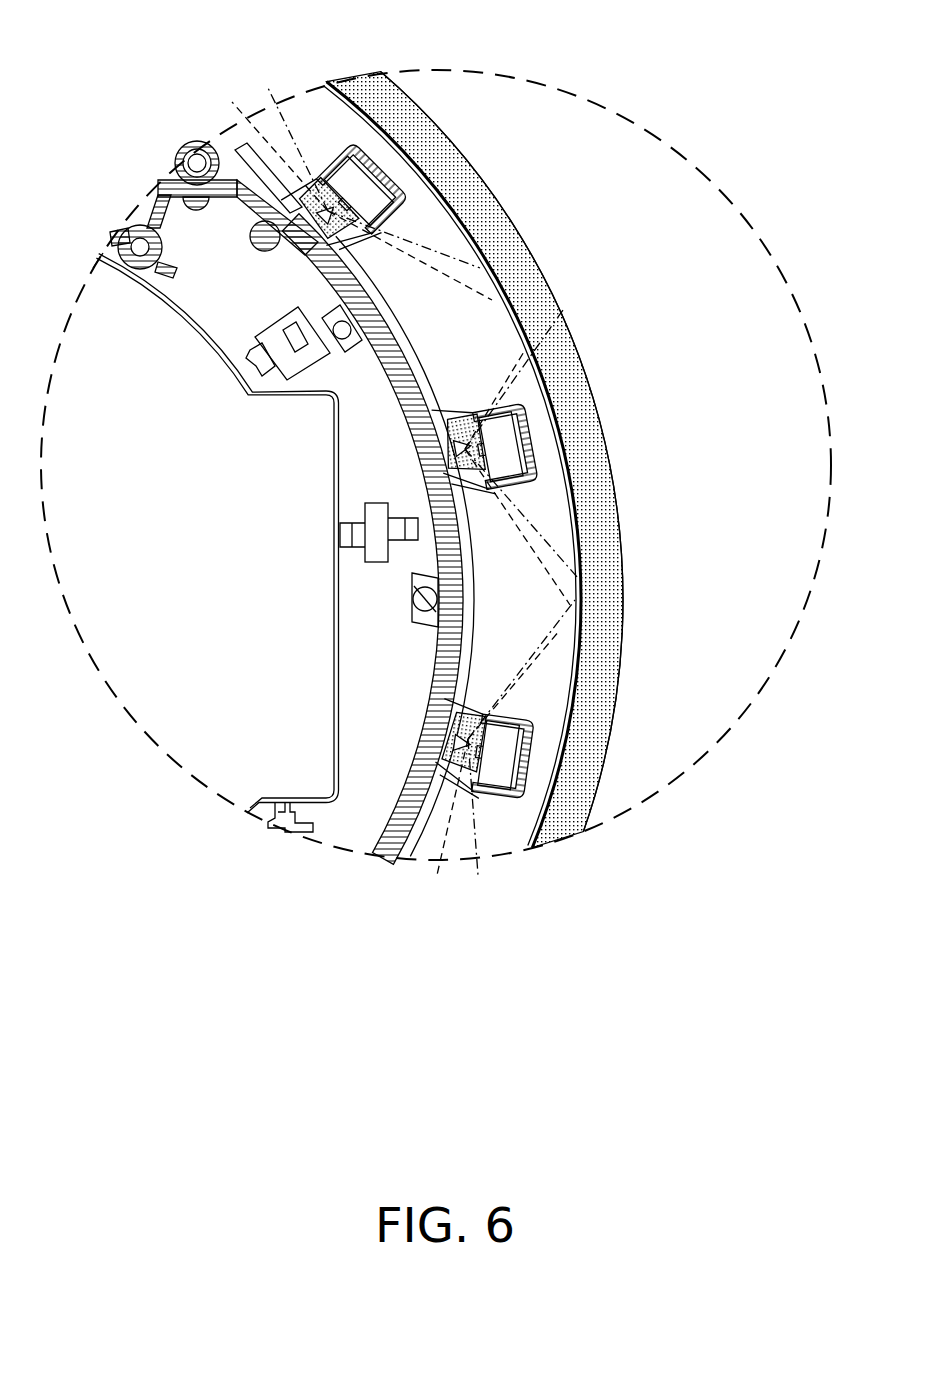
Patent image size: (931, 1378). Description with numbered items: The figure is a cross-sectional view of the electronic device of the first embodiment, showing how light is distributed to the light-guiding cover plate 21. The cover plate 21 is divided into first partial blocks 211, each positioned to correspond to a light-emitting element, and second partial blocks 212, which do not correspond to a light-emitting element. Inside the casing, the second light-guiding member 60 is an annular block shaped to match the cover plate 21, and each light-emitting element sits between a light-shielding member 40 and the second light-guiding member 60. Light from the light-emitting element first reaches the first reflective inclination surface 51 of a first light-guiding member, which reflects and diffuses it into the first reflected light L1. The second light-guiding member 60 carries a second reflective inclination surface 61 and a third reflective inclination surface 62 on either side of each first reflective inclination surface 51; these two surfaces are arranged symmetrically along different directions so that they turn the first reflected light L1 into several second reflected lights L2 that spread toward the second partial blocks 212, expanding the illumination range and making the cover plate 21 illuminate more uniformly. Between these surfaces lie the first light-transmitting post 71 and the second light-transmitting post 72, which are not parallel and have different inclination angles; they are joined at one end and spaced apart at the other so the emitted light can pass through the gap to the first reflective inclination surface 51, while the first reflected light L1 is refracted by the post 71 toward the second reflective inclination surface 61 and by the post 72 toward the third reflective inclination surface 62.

The light-guiding cover plate 21 is at (592, 352).
The first partial block 211 is at (434, 121).
The second partial block 212 is at (373, 94).
The light-shielding member 40 is at (366, 160).
The first reflective inclination surface 51 is at (342, 178).
The second light-guiding member 60 is at (385, 410).
The second reflective inclination surface 61 is at (290, 233).
The third reflective inclination surface 62 is at (338, 230).
The first light-transmitting post 71 is at (318, 195).
The second light-transmitting post 72 is at (350, 230).
The first reflected light L1 is at (648, 652).
The second reflected light L2 is at (648, 584).